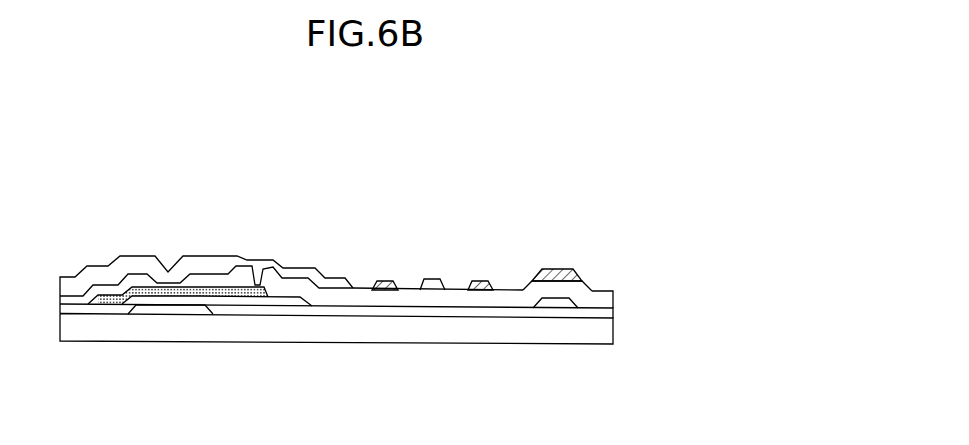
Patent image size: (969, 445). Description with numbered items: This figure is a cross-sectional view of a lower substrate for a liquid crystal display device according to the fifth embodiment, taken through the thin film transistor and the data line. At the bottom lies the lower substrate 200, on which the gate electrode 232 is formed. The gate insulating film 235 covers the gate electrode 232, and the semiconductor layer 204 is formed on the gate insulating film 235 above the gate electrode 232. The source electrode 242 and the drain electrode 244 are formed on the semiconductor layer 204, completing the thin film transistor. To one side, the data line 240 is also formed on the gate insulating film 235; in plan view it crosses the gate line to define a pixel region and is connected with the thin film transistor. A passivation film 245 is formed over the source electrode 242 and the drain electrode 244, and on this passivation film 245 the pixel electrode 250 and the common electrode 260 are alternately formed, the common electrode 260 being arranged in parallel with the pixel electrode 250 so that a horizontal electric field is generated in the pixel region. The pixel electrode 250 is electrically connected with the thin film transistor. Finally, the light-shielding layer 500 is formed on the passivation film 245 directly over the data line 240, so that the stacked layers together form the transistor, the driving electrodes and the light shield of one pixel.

The lower substrate 200 is at (613, 342).
The gate insulating film 235 is at (613, 313).
The gate electrode 232 is at (167, 311).
The data line 240 is at (557, 302).
The passivation film 245 is at (613, 302).
The semiconductor layer 204 is at (117, 306).
The drain electrode 244 is at (234, 289).
The source electrode 242 is at (73, 301).
The pixel electrode 250 is at (190, 254).
The common electrode 260 is at (386, 281).
The light-shielding layer 500 is at (552, 270).